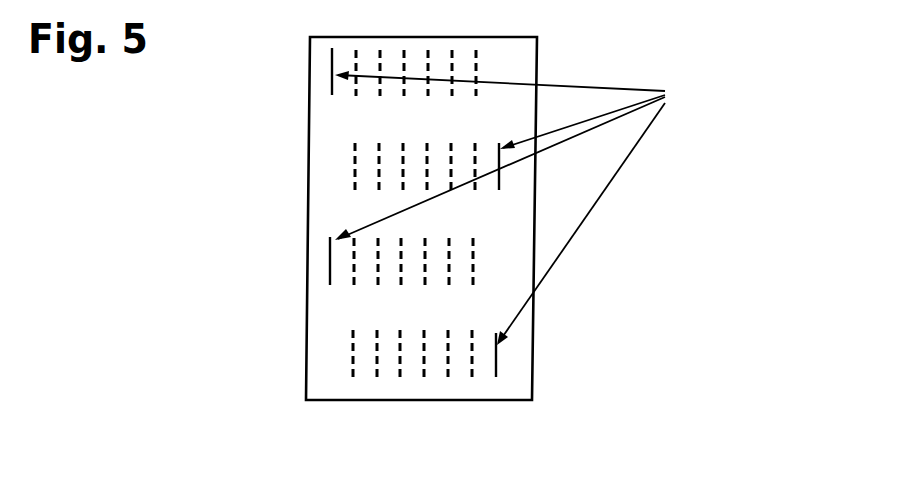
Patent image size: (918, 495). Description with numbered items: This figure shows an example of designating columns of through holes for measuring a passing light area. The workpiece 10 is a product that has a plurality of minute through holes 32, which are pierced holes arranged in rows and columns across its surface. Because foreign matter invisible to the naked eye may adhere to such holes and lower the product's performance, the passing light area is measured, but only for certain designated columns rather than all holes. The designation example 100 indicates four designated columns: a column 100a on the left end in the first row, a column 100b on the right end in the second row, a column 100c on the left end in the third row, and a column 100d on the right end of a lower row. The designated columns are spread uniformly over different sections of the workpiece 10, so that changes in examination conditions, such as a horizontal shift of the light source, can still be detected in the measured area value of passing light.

The workpiece 10 is at (415, 388).
The through holes 32 is at (352, 372).
The designation example 100 is at (602, 208).
The column on the left end in the first row 100a is at (332, 60).
The column on the right end in the second row 100b is at (499, 180).
The column on the left end in the third row 100c is at (330, 262).
The column on the right end in the second row 100d is at (496, 365).